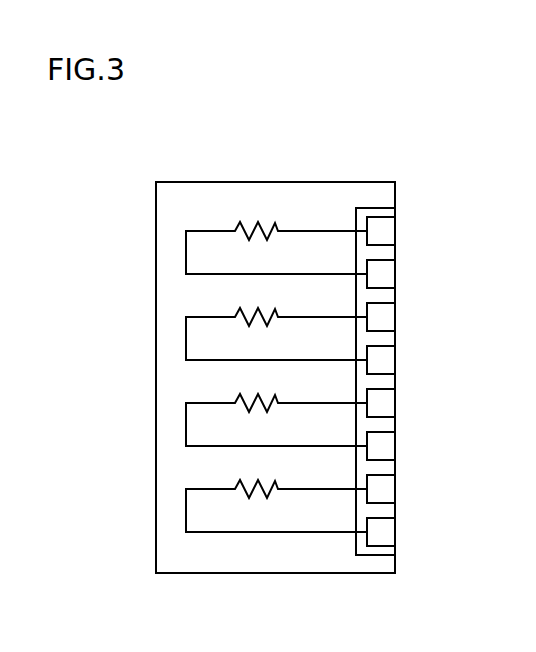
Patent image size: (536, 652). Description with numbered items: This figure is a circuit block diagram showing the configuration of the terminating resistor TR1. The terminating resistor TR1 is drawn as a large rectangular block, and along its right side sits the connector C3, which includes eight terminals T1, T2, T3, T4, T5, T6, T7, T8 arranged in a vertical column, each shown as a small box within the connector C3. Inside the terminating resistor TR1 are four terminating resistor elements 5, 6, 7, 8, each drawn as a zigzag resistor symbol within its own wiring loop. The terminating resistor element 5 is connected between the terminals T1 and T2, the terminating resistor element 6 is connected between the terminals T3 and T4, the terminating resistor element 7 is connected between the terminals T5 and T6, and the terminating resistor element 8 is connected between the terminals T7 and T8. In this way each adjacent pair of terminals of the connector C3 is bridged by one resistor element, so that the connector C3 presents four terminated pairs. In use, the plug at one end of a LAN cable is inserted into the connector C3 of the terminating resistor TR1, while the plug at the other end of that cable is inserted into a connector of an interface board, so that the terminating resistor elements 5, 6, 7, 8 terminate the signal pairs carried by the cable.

The terminating resistor TR1 is at (152, 178).
The connector C3 is at (375, 206).
The terminating resistor element 5 is at (252, 219).
The terminating resistor element 6 is at (252, 305).
The terminating resistor element 7 is at (252, 391).
The terminating resistor element 8 is at (252, 477).
The terminal T1 is at (388, 231).
The terminal T2 is at (388, 274).
The terminal T3 is at (388, 317).
The terminal T4 is at (388, 360).
The terminal T5 is at (388, 403).
The terminal T6 is at (388, 446).
The terminal T7 is at (388, 489).
The terminal T8 is at (388, 532).